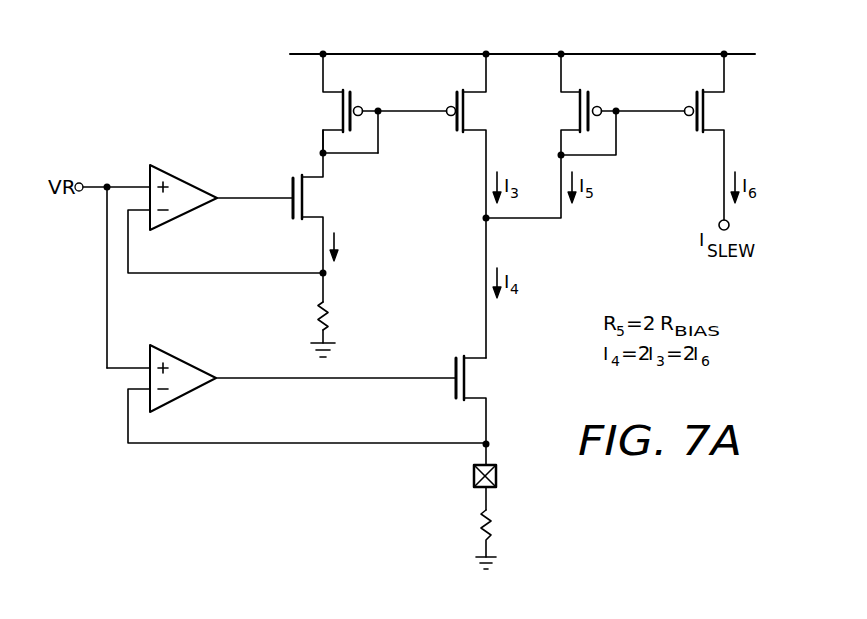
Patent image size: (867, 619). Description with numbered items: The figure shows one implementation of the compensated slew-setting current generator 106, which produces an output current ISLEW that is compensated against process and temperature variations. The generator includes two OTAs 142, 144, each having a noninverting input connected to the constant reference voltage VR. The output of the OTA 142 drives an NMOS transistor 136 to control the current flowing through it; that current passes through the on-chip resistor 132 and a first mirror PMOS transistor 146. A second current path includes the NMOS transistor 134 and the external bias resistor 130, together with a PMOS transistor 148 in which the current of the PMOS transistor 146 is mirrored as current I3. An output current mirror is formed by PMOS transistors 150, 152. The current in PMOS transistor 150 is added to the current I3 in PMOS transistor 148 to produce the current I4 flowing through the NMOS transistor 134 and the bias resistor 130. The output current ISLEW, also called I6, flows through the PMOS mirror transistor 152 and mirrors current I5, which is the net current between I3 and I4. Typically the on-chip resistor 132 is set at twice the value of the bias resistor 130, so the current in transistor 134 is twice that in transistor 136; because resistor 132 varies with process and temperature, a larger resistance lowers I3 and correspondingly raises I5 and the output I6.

The compensated slew-setting current generator 106 is at (186, 77).
The bias resistor RBIAS 130 is at (477, 520).
The on-chip resistor 132 is at (314, 308).
The NMOS transistor 134 is at (453, 394).
The NMOS transistor 136 is at (291, 213).
The OTA 142 is at (185, 180).
The OTA 144 is at (185, 360).
The first mirror PMOS transistor 146 is at (353, 96).
The PMOS transistor 148 is at (455, 128).
The PMOS transistor 150 is at (591, 97).
The PMOS mirror transistor 152 is at (694, 128).